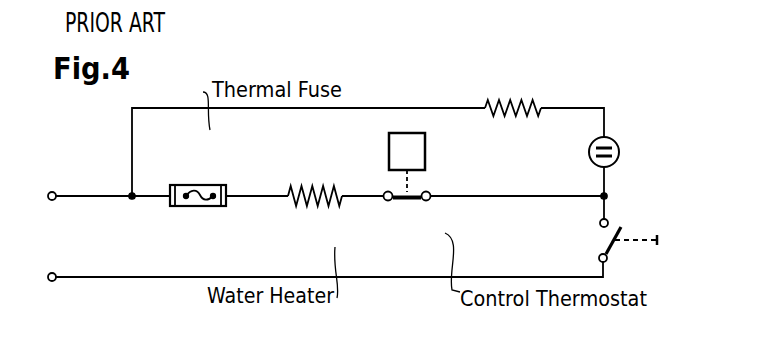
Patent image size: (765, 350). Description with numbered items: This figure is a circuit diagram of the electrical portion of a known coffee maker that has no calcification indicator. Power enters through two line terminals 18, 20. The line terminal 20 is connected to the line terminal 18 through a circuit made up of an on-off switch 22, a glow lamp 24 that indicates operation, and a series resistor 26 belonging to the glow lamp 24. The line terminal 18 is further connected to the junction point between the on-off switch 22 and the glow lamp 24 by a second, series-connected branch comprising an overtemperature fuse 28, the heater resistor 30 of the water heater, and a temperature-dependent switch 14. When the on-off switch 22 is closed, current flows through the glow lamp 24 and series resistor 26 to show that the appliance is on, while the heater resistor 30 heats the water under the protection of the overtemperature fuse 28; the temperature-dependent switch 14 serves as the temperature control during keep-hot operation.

The temperature-dependent switch 14 is at (415, 203).
The line terminal 18 is at (52, 191).
The line terminal 20 is at (48, 274).
The on-off switch 22 is at (617, 245).
The glow lamp 24 is at (615, 140).
The series resistor 26 is at (496, 100).
The overtemperature fuse 28 is at (187, 185).
The heater resistor 30 is at (318, 207).